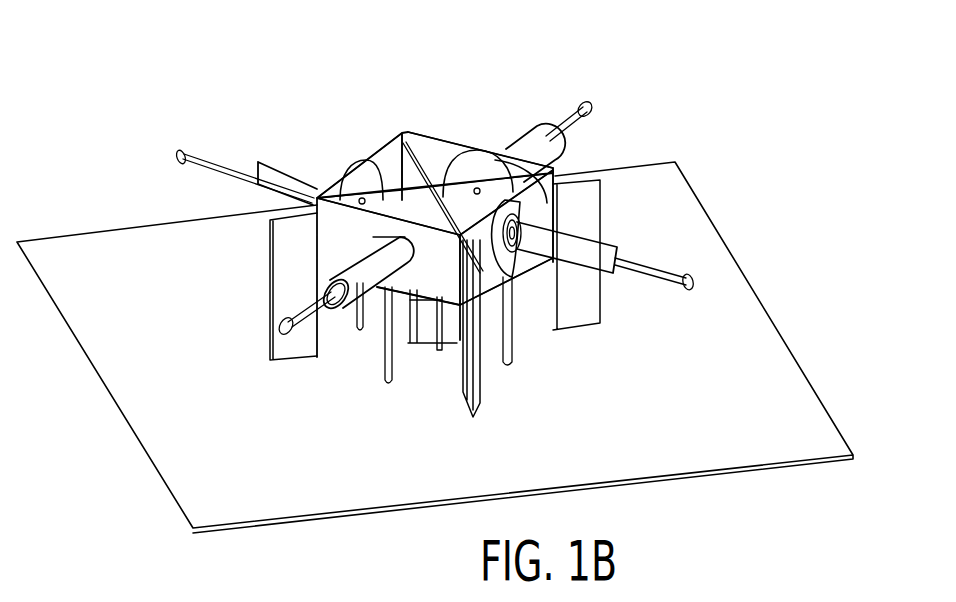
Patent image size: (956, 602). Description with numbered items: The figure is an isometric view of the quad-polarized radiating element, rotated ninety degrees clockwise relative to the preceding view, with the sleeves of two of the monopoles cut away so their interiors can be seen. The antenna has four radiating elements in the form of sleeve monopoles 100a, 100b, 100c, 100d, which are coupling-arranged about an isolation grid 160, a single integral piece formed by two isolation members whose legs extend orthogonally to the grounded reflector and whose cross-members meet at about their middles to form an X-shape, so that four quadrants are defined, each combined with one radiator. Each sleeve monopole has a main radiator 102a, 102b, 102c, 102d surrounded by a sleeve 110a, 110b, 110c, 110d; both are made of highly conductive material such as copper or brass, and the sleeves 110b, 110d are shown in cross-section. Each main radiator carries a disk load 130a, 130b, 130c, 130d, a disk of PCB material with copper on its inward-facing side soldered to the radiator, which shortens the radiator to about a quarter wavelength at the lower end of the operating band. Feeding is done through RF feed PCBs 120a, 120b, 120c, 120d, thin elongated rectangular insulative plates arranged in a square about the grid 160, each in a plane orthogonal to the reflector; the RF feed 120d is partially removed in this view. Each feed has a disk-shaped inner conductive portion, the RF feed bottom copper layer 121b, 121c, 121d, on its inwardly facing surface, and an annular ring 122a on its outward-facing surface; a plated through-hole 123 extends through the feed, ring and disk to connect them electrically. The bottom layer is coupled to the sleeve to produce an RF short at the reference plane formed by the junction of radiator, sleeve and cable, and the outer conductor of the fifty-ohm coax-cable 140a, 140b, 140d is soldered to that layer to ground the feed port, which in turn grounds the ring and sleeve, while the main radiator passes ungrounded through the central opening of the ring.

The sleeve monopole 100a is at (312, 298).
The sleeve monopole 100b is at (215, 159).
The sleeve monopole 100c is at (577, 113).
The sleeve monopole 100d is at (654, 272).
The main radiator 102a is at (302, 300).
The main radiator 102b is at (237, 180).
The main radiator 102c is at (553, 134).
The main radiator 102d is at (648, 280).
The sleeve 110a is at (352, 266).
The sleeve 110b is at (285, 146).
The sleeve 110c is at (547, 153).
The sleeve 110d is at (607, 243).
The RF feed PCB 120a is at (422, 341).
The RF feed PCB 120b is at (396, 132).
The RF feed PCB 120c is at (432, 135).
The RF feed PCB 120d is at (548, 203).
The RF feed bottom copper layer 121b is at (367, 180).
The RF feed bottom copper layer 121c is at (473, 163).
The RF feed bottom copper layer 121d is at (500, 268).
The annular ring 122a is at (378, 238).
The through-hole 123 is at (418, 340).
The disk load 130a is at (282, 323).
The disk load 130b is at (205, 132).
The disk load 130c is at (592, 108).
The disk load 130d is at (693, 288).
The coax-cable 140a is at (383, 381).
The coax-cable 140b is at (354, 330).
The coax-cable 140d is at (512, 362).
The isolation grid 160 is at (280, 272).